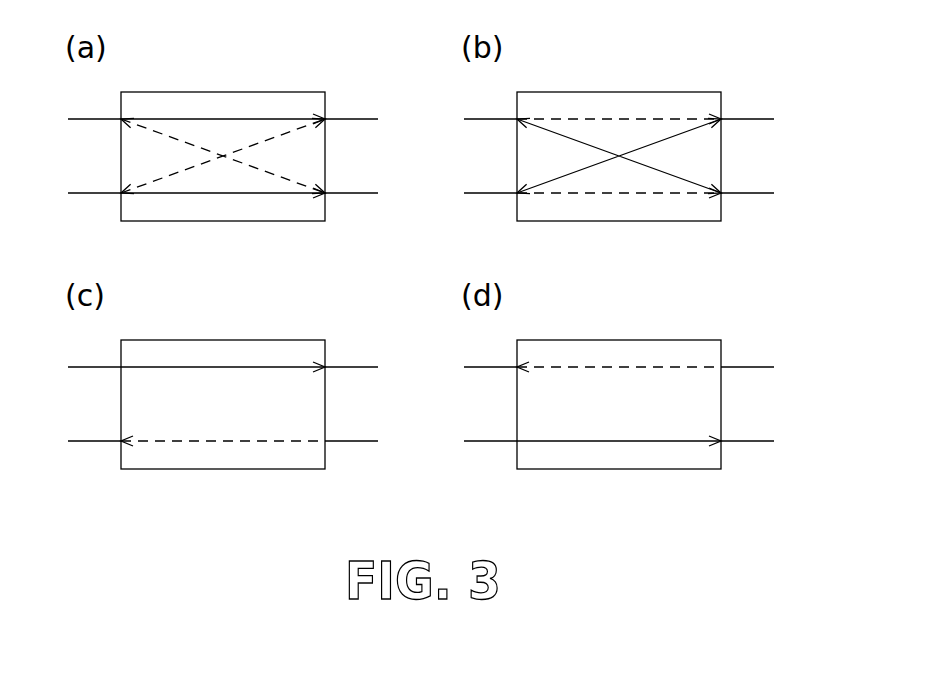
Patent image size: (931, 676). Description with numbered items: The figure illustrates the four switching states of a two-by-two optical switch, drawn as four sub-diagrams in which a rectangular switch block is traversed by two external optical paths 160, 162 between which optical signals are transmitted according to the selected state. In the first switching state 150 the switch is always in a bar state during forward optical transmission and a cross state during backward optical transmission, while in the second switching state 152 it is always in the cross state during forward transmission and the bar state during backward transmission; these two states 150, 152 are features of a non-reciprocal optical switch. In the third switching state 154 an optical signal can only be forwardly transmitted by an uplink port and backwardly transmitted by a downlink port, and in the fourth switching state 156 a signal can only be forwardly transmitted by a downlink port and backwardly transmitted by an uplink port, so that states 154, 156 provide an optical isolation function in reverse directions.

The switching state 150 is at (223, 92).
The switching state 152 is at (619, 92).
The switching state 154 is at (223, 340).
The switching state 156 is at (619, 340).
The external optical path 160 is at (347, 119).
The external optical path 162 is at (347, 193).